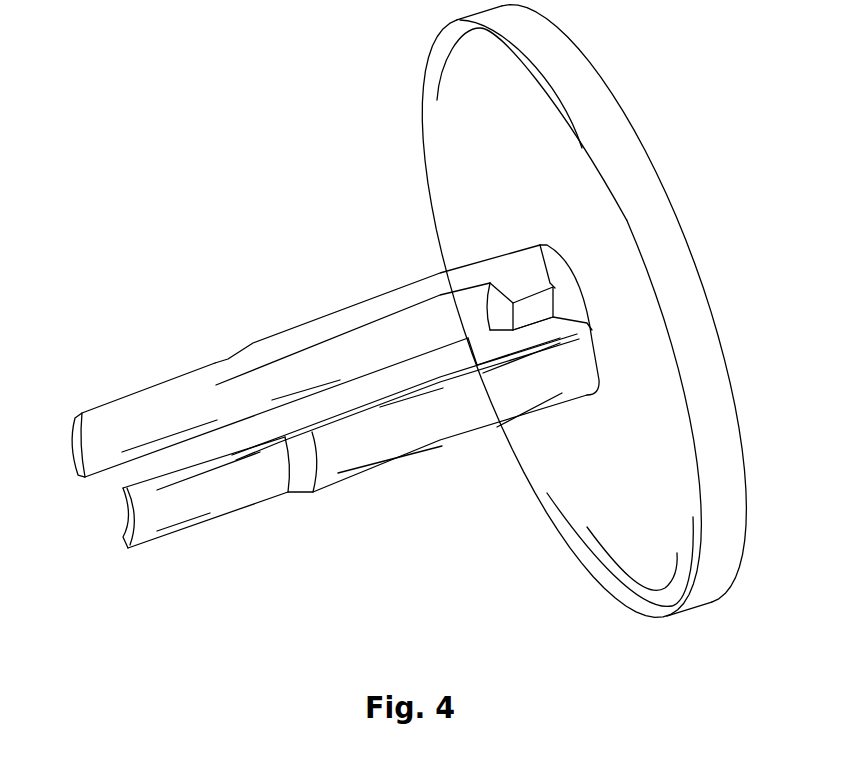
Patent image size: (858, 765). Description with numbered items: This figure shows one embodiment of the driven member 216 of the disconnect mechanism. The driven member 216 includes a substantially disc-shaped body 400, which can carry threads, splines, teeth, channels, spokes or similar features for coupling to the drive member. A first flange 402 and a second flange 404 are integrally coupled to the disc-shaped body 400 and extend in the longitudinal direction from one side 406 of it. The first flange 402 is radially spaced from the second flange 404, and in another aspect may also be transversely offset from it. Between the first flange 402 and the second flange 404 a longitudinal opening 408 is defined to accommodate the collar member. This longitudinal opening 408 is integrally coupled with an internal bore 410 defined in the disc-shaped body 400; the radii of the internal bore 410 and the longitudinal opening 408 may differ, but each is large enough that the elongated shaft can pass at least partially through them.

The driven member 216 is at (187, 159).
The substantially disc-shaped body 400 is at (586, 311).
The first flange 402 is at (127, 408).
The second flange 404 is at (192, 500).
The side of the disc-shaped body 406 is at (452, 137).
The longitudinal opening 408 is at (248, 428).
The internal bore 410 is at (557, 302).